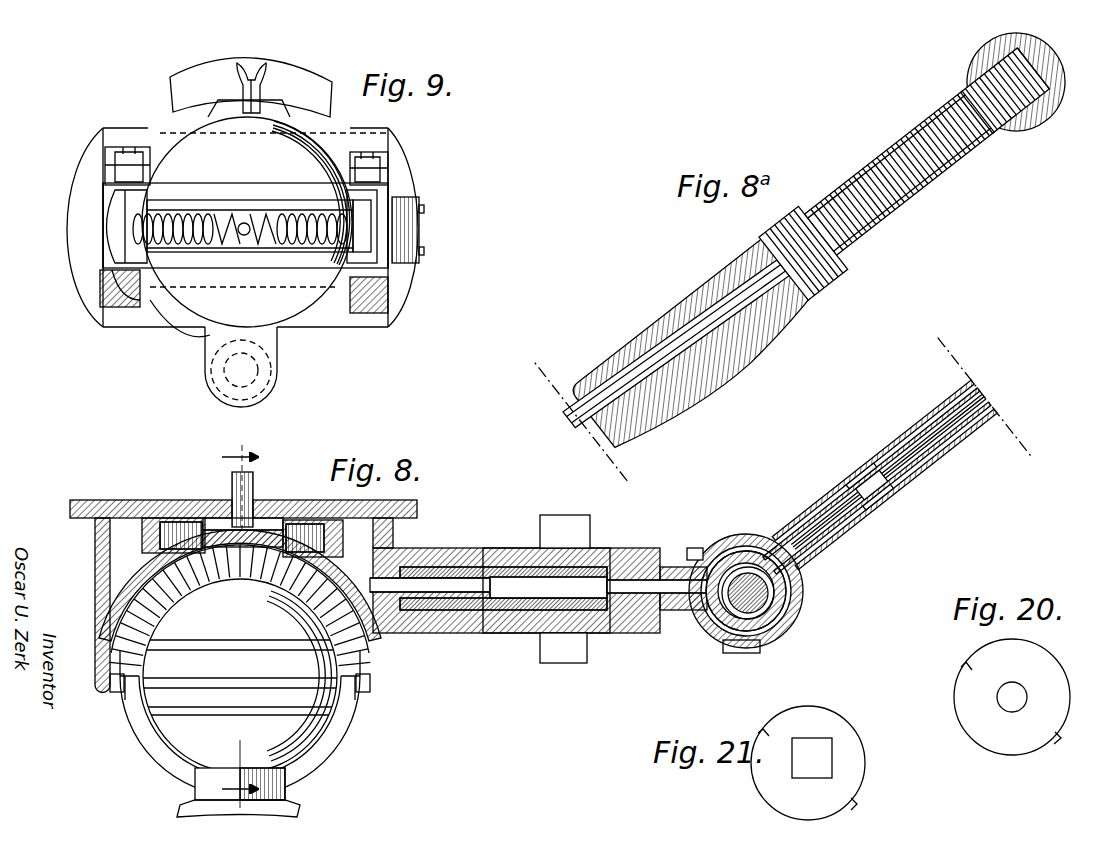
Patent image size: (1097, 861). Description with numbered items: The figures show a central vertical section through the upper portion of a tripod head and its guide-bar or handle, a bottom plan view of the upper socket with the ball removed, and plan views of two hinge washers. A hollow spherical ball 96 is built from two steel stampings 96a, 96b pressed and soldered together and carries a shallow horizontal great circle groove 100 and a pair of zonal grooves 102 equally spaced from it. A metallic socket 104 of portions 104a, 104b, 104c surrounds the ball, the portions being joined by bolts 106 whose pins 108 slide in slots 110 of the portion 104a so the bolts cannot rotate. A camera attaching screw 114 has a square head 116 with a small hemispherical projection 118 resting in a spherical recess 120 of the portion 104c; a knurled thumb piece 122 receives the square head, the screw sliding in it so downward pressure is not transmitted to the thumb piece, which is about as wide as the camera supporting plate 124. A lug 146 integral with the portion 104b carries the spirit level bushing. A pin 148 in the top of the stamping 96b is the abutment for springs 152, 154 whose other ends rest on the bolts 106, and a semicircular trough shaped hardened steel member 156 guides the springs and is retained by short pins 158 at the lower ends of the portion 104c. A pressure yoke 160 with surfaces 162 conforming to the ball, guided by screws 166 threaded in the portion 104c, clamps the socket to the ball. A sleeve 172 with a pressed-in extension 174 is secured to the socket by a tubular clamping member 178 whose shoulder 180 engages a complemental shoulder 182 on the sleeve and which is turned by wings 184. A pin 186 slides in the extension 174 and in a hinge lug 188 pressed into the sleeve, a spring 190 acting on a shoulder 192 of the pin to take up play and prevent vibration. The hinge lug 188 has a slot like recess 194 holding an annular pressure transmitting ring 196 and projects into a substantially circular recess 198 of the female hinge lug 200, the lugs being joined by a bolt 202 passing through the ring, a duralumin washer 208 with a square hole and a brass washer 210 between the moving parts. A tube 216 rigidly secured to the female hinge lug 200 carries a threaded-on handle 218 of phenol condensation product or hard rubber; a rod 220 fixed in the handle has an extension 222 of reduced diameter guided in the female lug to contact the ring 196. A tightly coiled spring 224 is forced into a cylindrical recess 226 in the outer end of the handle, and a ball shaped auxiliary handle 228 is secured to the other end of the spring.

In FIG. 8, the hollow spherical ball 96 is at (310, 755).
In FIG. 8, the steel stamping 96a is at (200, 775).
In FIG. 8, the steel stamping 96b is at (177, 613).
In FIG. 8, the great circle groove 100 is at (187, 661).
In FIG. 8, the zonal grooves 102 is at (150, 640).
In FIG. 9, the metallic socket 104 is at (377, 193).
In FIG. 9, the socket portion 104a is at (293, 157).
In FIG. 9, the socket portion 104b is at (183, 337).
In FIG. 8, the socket portion 104c is at (380, 640).
In FIG. 9, the bolts 106 is at (415, 233).
In FIG. 8, the bolts 106 is at (130, 707).
In FIG. 9, the pins 108 is at (115, 173).
In FIG. 9, the slots 110 is at (113, 155).
In FIG. 8, the camera attaching screw 114 is at (257, 477).
In FIG. 8, the square head 116 is at (247, 527).
In FIG. 8, the hemispherical projection 118 is at (223, 530).
In FIG. 8, the spherical recess 120 is at (273, 533).
In FIG. 8, the knurled thumb piece 122 is at (333, 540).
In FIG. 9, the camera supporting plate 124 is at (87, 263).
In FIG. 8, the camera supporting plate 124 is at (90, 500).
In FIG. 9, the lug 146 is at (213, 397).
In FIG. 9, the pin 148 is at (242, 237).
In FIG. 8, the pin 148 is at (240, 590).
In FIG. 9, the spring 152 is at (143, 227).
In FIG. 8, the spring 152 is at (130, 665).
In FIG. 9, the spring 154 is at (300, 245).
In FIG. 8, the spring 154 is at (377, 627).
In FIG. 8, the hardened steel member 156 is at (385, 648).
In FIG. 8, the short pins 158 is at (112, 684).
In FIG. 8, the pressure yoke 160 is at (400, 622).
In FIG. 8, the surfaces 162 is at (290, 597).
In FIG. 9, the screws 166 is at (313, 180).
In FIG. 8, the sleeve 172 is at (592, 633).
In FIG. 8, the extension 174 is at (477, 550).
In FIG. 8, the tubular clamping member 178 is at (510, 550).
In FIG. 8, the shoulder 180 is at (443, 567).
In FIG. 8, the complemental shoulder 182 is at (430, 549).
In FIG. 8, the wings 184 is at (590, 530).
In FIG. 8, the pin 186 is at (527, 600).
In FIG. 8, the hinge lug 188 is at (712, 647).
In FIG. 8, the spring 190 is at (473, 633).
In FIG. 8, the shoulder 192 is at (545, 548).
In FIG. 8, the slot like recess 194 is at (695, 556).
In FIG. 8, the pressure transmitting ring 196 is at (773, 624).
In FIG. 8, the circular recess 198 is at (796, 603).
In FIG. 8, the female hinge lug 200 is at (740, 533).
In FIG. 8, the bolt 202 is at (755, 596).
In FIG. 21, the duralumin washer 208 is at (780, 790).
In FIG. 20, the brass washer 210 is at (975, 710).
In FIG. 8, the tube 216 is at (900, 500).
In FIG. 8A, the handle 218 is at (737, 368).
In FIG. 8A, the rod 220 is at (680, 345).
In FIG. 8, the extension 222 is at (843, 543).
In FIG. 8A, the coiled spring 224 is at (907, 205).
In FIG. 8A, the cylindrical recess 226 is at (830, 288).
In FIG. 8A, the auxiliary handle 228 is at (1030, 128).